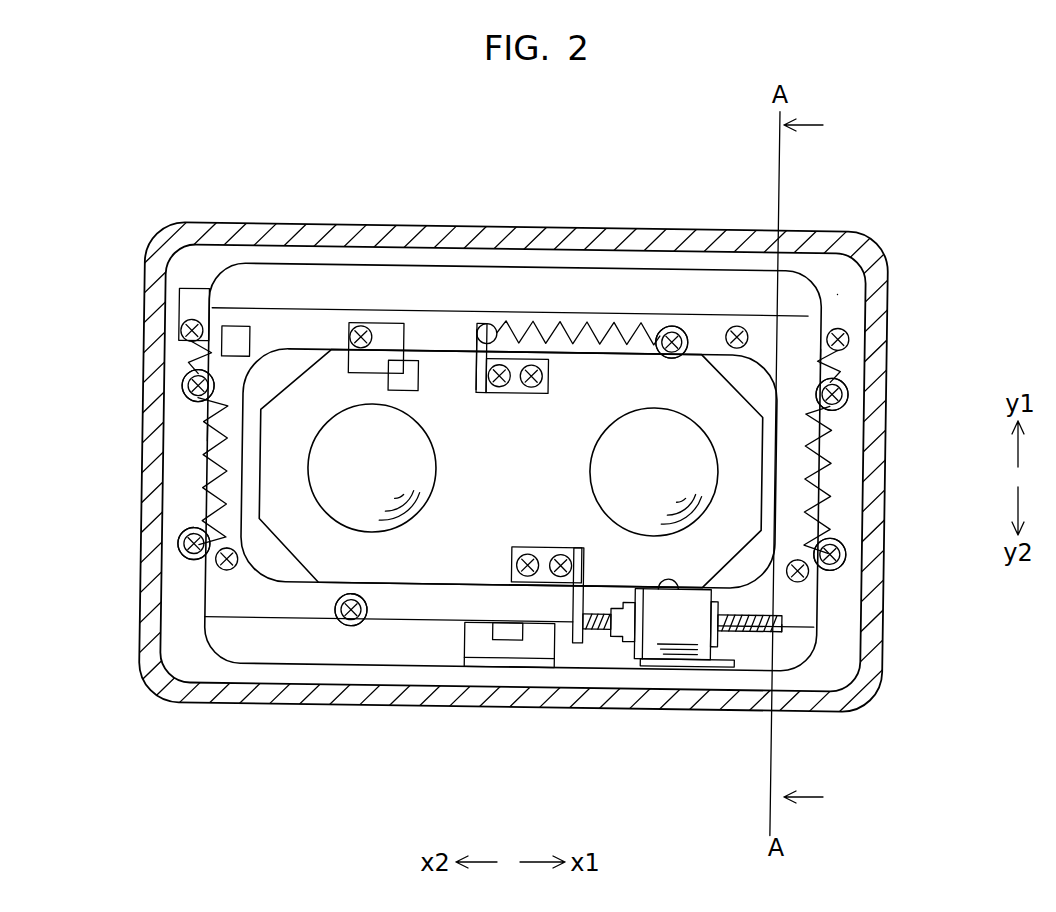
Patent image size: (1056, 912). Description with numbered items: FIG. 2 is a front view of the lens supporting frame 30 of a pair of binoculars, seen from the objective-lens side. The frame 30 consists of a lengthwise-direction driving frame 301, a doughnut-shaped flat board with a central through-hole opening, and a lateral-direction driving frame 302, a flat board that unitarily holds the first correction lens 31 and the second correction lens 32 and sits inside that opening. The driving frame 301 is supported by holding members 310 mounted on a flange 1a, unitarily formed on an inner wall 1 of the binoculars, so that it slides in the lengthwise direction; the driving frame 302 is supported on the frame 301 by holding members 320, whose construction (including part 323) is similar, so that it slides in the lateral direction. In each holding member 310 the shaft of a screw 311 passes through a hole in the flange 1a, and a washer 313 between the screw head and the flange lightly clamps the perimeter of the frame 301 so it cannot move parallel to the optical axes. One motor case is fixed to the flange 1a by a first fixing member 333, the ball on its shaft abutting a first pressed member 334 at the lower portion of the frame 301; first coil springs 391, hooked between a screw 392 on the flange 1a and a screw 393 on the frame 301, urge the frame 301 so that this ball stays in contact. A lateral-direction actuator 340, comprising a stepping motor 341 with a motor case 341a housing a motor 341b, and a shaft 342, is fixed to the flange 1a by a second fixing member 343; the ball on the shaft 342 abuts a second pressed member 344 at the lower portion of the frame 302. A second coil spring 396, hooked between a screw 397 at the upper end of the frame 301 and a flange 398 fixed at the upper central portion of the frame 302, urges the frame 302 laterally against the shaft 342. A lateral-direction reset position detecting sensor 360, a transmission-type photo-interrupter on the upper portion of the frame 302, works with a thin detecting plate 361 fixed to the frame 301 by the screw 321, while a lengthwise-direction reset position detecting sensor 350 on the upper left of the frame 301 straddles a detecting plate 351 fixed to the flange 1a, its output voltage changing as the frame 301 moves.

The inner wall 1 is at (895, 245).
The flange 1a is at (835, 288).
The lens supporting frame 30 is at (564, 292).
The lengthwise-direction driving frame 301 is at (790, 342).
The lateral-direction driving frame 302 is at (310, 540).
The first correction lens 31 is at (692, 472).
The second correction lens 32 is at (348, 480).
The holding member 310 is at (845, 431).
The screw 311 is at (845, 380).
The washer 313 is at (848, 393).
The holding member 320 is at (336, 318).
The screw 321 is at (367, 325).
The engaging piece 323 is at (337, 325).
The first fixing member 333 is at (475, 640).
The first pressed member 334 is at (510, 636).
The lateral-direction actuator 340 is at (785, 627).
The stepping motor 341 is at (685, 669).
The motor case 341a is at (722, 655).
The motor 341b is at (760, 646).
The shaft 342 is at (633, 655).
The second fixing member 343 is at (640, 648).
The second pressed member 344 is at (584, 626).
The lengthwise-direction reset position detecting sensor 350 is at (197, 297).
The lengthwise-direction reset position detecting plate 351 is at (170, 322).
The lateral-direction reset position detecting sensor 360 is at (477, 367).
The lateral-direction reset position detecting plate 361 is at (408, 357).
The first coil spring 391 is at (860, 352).
The screw 392 is at (848, 333).
The screw 393 is at (797, 583).
The second coil spring 396 is at (580, 325).
The screw 397 is at (733, 325).
The flange 398 is at (484, 323).